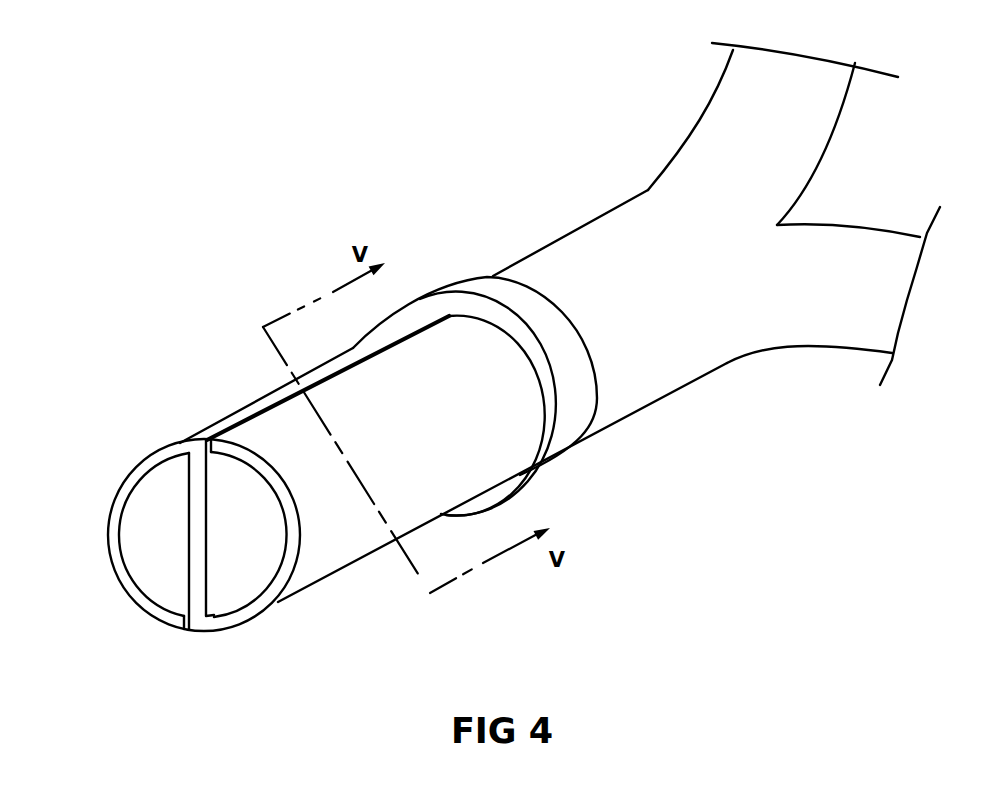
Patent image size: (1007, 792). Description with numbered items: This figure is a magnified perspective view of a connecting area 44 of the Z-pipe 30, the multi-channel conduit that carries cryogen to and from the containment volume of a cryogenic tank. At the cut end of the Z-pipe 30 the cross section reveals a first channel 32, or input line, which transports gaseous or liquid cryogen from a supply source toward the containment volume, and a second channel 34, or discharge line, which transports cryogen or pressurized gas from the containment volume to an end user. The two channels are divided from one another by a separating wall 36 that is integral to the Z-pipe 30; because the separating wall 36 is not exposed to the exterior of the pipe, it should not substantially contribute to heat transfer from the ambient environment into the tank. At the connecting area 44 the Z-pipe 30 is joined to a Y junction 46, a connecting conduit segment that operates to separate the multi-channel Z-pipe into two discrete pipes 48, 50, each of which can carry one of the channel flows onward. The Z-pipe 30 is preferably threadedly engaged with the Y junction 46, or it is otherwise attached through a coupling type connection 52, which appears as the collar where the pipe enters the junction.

The Z-pipe 30 is at (522, 607).
The first channel 32 is at (240, 552).
The second channel 34 is at (153, 554).
The separating wall 36 is at (195, 492).
The connecting area 44 is at (246, 200).
The Y junction 46 is at (572, 158).
The discrete pipe 48 is at (719, 143).
The discrete pipe 50 is at (833, 313).
The coupling type connection 52 is at (477, 281).